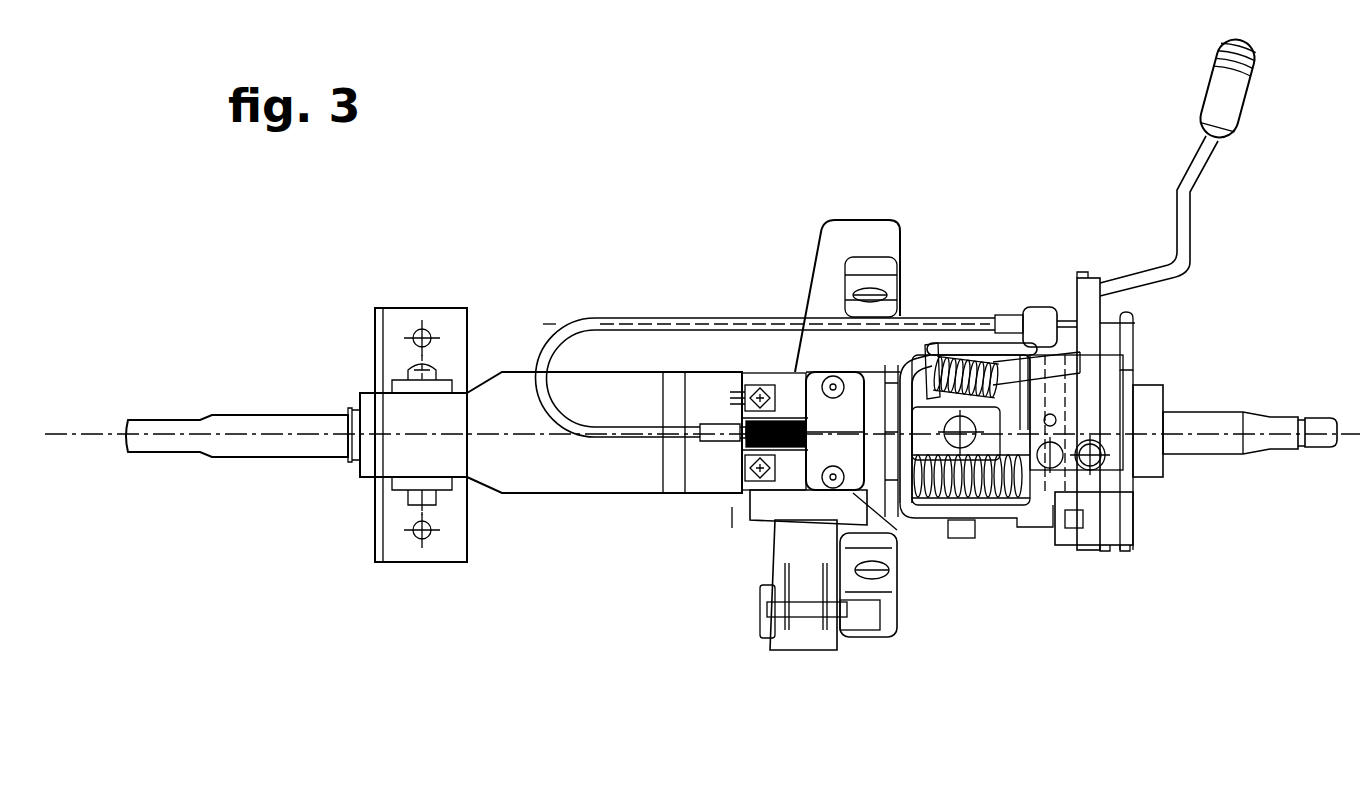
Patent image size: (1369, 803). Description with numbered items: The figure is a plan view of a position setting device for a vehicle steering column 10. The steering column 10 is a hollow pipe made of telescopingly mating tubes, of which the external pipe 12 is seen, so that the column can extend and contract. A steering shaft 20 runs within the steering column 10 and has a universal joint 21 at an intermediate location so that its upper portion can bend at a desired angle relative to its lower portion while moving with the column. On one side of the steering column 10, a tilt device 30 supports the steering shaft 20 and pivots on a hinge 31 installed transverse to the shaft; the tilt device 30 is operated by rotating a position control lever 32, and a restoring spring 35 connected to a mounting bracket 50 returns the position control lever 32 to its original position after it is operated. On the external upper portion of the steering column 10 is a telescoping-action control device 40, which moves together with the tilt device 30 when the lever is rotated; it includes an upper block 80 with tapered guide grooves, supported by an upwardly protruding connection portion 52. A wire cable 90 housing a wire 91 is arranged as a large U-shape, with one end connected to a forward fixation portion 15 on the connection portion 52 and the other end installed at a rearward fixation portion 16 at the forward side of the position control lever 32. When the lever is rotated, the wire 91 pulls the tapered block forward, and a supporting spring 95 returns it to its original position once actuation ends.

The steering column 10 is at (550, 553).
The external pipe 12 is at (622, 482).
The forward fixation portion 15 is at (737, 453).
The rearward fixation portion 16 is at (1037, 313).
The steering shaft 20 is at (1203, 448).
The universal joint 21 is at (992, 513).
The tilt device 30 is at (1113, 595).
The hinge 31 is at (957, 333).
The position control lever 32 is at (1163, 280).
The restoring spring 35 is at (987, 348).
The telescoping-action control device 40 is at (767, 357).
The mounting bracket 50 is at (910, 523).
The connection portion 52 is at (897, 500).
The upper block 80 is at (800, 378).
The wire cable 90 is at (565, 327).
The wire 91 is at (1068, 323).
The supporting spring 95 is at (760, 520).